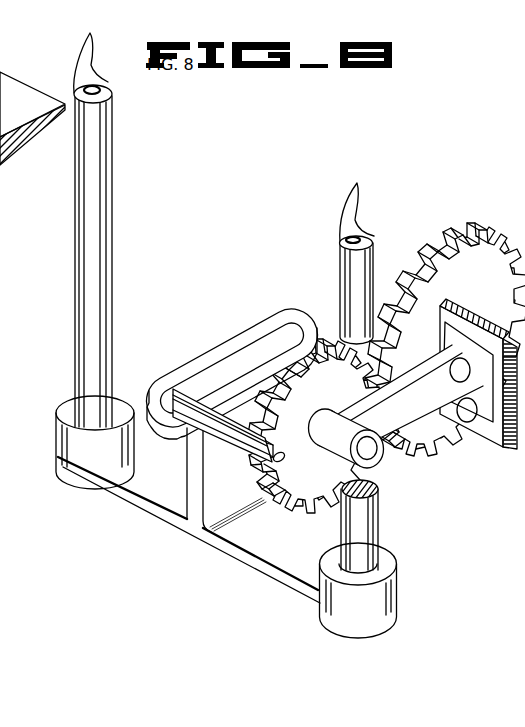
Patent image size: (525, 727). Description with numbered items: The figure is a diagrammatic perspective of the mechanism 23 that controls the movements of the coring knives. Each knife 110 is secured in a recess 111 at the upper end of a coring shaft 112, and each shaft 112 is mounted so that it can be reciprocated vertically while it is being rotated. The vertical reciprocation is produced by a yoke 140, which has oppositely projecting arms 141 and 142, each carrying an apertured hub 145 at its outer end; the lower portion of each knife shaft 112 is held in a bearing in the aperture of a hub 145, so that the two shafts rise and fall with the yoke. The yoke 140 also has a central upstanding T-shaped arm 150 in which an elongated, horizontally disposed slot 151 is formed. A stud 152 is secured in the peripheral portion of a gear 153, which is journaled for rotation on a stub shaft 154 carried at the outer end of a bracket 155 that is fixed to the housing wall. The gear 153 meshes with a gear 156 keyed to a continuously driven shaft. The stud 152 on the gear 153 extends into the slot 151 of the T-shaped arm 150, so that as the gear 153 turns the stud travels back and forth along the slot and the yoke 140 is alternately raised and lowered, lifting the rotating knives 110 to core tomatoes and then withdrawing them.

The drive mechanism assembly 23 is at (136, 512).
The knife 110 is at (87, 67).
The recess 111 is at (110, 90).
The coring shaft 112 is at (105, 132).
The yoke 140 is at (222, 552).
The arm 141 is at (189, 530).
The arm 142 is at (270, 549).
The apertured hub 145 is at (65, 438).
The T-shaped arm 150 is at (251, 325).
The slot 151 is at (231, 352).
The stud 152 is at (213, 422).
The gear 153 is at (315, 426).
The stub shaft 154 is at (370, 455).
The bracket 155 is at (403, 403).
The gear 156 is at (497, 271).